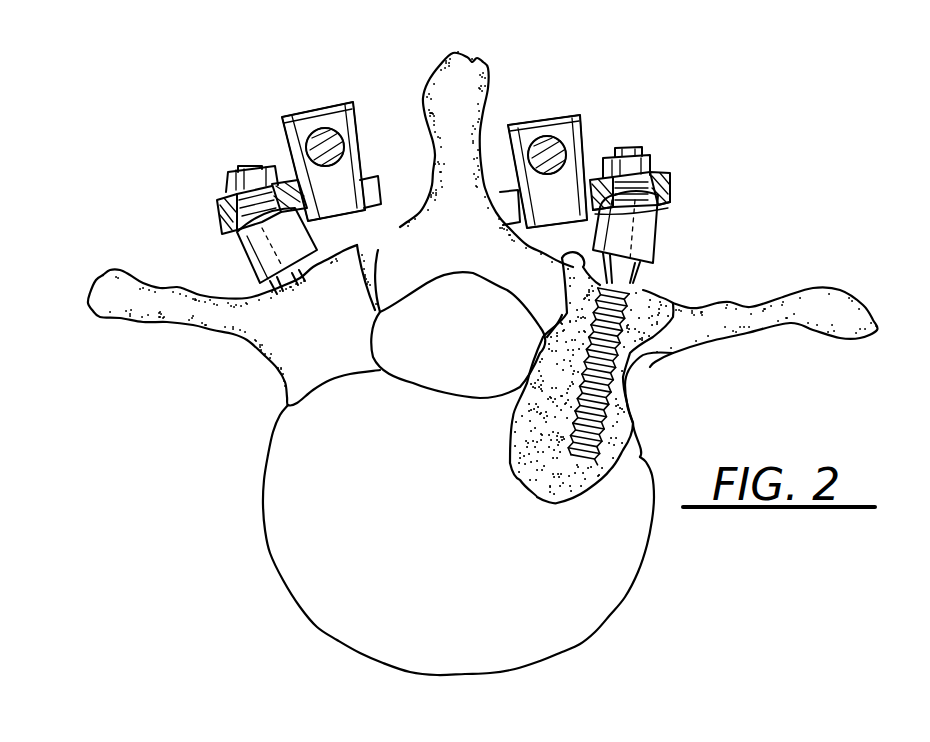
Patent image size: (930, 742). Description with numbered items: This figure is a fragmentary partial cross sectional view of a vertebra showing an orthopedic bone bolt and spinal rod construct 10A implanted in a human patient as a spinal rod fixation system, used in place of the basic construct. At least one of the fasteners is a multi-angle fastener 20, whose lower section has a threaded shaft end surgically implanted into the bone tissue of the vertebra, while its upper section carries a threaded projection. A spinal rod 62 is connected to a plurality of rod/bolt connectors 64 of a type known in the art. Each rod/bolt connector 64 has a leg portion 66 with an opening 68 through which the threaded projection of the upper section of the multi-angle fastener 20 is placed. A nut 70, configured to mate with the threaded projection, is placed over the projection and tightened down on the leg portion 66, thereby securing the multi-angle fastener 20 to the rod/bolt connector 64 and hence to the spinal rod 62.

The orthopedic bone bolt and spinal rod construct 10A is at (197, 229).
The multi-angle fastener 20 is at (662, 235).
The spinal rod 62 is at (282, 125).
The rod/bolt connector 64 is at (357, 115).
The leg portion 66 is at (688, 198).
The opening 68 is at (673, 190).
The nut 70 is at (642, 152).